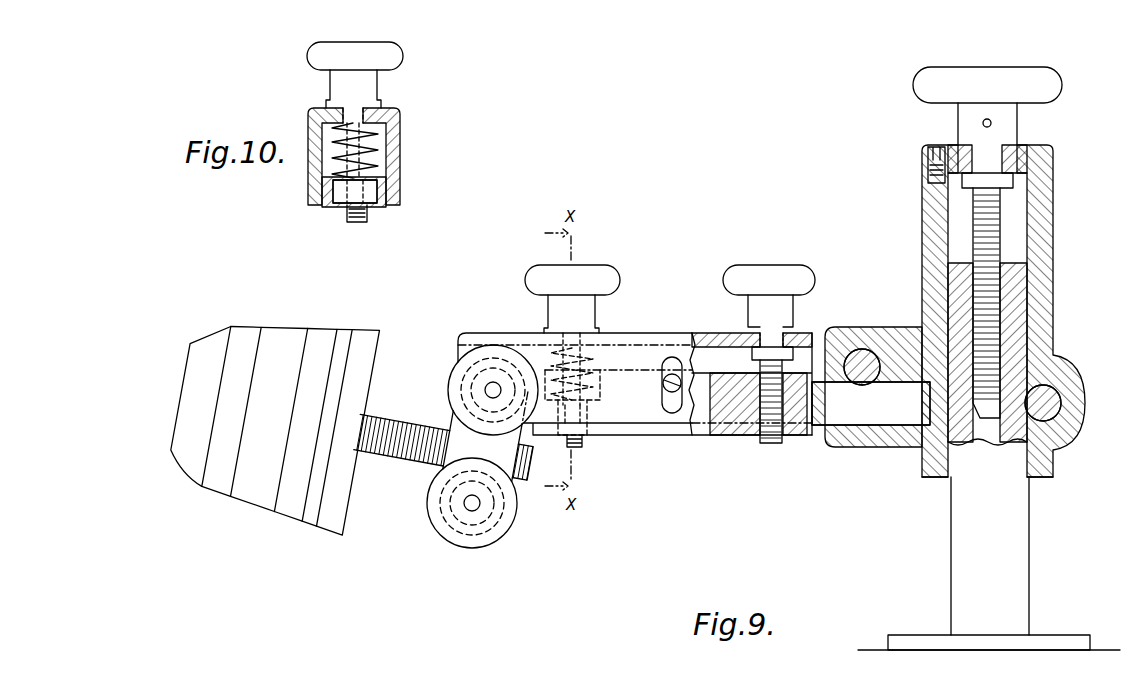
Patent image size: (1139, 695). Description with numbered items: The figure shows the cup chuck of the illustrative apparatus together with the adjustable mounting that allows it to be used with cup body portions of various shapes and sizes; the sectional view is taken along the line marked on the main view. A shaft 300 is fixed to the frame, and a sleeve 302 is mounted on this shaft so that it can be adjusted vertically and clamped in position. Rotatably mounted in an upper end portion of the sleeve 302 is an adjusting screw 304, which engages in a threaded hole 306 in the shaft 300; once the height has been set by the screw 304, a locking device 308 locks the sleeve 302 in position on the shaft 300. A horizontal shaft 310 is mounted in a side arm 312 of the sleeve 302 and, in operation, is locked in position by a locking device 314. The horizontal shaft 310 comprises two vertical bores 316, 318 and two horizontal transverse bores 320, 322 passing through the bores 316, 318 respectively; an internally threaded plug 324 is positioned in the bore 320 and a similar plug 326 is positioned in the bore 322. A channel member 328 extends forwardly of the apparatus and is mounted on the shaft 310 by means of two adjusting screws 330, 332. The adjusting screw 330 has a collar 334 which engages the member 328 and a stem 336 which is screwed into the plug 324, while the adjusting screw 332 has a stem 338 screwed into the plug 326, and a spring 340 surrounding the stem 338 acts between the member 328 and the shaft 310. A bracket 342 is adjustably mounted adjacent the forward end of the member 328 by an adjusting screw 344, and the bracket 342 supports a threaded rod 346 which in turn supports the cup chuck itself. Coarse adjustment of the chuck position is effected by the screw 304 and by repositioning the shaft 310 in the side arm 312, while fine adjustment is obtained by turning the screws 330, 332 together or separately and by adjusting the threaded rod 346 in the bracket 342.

In FIG. 9, the shaft 300 is at (1017, 503).
In FIG. 9, the sleeve 302 is at (1047, 283).
In FIG. 9, the adjusting screw 304 is at (1008, 124).
In FIG. 9, the threaded hole 306 is at (1002, 358).
In FIG. 9, the locking device 308 is at (1053, 403).
In FIG. 10, the horizontal shaft 310 is at (383, 174).
In FIG. 9, the horizontal shaft 310 is at (690, 440).
In FIG. 9, the side arm 312 is at (858, 443).
In FIG. 9, the locking device 314 is at (866, 360).
In FIG. 9, the vertical bore 316 is at (742, 418).
In FIG. 10, the vertical bore 318 is at (343, 198).
In FIG. 9, the vertical bore 318 is at (594, 401).
In FIG. 9, the horizontal transverse bore 320 is at (788, 418).
In FIG. 10, the horizontal transverse bore 322 is at (378, 180).
In FIG. 9, the horizontal transverse bore 322 is at (562, 440).
In FIG. 9, the internally threaded plug 324 is at (758, 433).
In FIG. 10, the plug 326 is at (373, 194).
In FIG. 9, the plug 326 is at (586, 436).
In FIG. 10, the channel member 328 is at (392, 150).
In FIG. 9, the channel member 328 is at (663, 423).
In FIG. 9, the adjusting screw 330 is at (812, 277).
In FIG. 10, the adjusting screw 332 is at (392, 55).
In FIG. 9, the adjusting screw 332 is at (609, 272).
In FIG. 9, the collar 334 is at (786, 352).
In FIG. 9, the stem 336 is at (768, 368).
In FIG. 10, the stem 338 is at (357, 116).
In FIG. 9, the stem 338 is at (592, 356).
In FIG. 10, the spring 340 is at (367, 131).
In FIG. 9, the spring 340 is at (588, 364).
In FIG. 9, the bracket 342 is at (457, 428).
In FIG. 9, the adjusting screw 344 is at (490, 388).
In FIG. 9, the threaded rod 346 is at (402, 463).